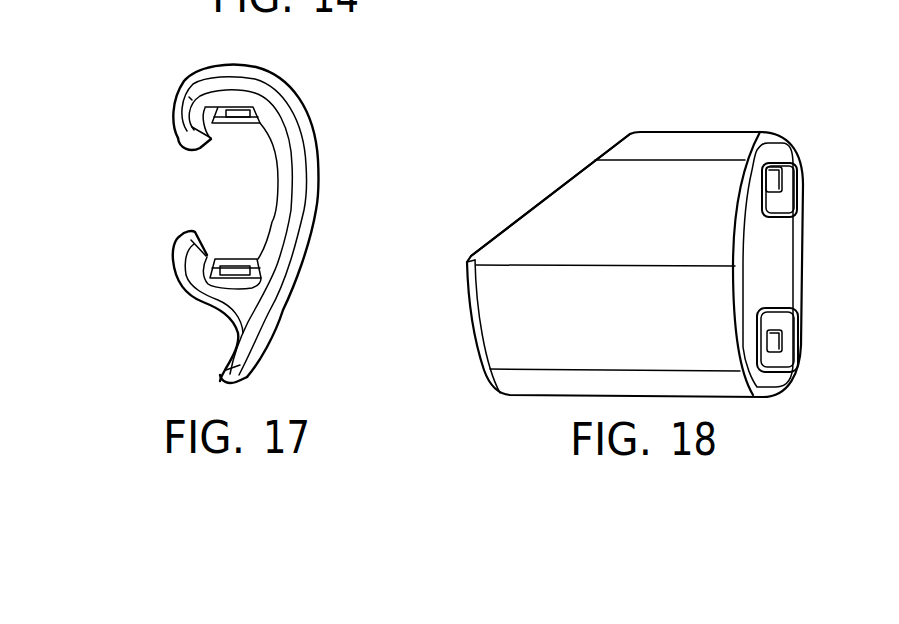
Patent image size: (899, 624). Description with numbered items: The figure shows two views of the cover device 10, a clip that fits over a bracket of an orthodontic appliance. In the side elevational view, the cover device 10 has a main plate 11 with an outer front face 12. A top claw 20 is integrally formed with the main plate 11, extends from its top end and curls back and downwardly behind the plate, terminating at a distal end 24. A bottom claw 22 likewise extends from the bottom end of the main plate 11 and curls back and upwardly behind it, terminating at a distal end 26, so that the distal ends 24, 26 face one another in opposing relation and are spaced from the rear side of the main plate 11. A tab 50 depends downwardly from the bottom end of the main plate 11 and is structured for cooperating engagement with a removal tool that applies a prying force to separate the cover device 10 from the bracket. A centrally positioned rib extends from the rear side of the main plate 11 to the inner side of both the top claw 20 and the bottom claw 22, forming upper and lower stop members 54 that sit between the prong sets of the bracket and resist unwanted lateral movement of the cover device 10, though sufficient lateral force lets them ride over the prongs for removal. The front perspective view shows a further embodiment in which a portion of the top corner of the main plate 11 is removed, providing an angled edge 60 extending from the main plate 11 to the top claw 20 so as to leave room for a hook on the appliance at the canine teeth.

In FIG. 17, the cover device 10 is at (340, 102).
In FIG. 18, the cover device 10 is at (772, 65).
In FIG. 17, the main plate 11 is at (315, 172).
In FIG. 18, the main plate 11 is at (572, 237).
In FIG. 18, the outer front face 12 is at (547, 317).
In FIG. 17, the top claw 20 is at (189, 84).
In FIG. 18, the top claw 20 is at (792, 185).
In FIG. 17, the bottom claw 22 is at (193, 297).
In FIG. 18, the bottom claw 22 is at (785, 347).
In FIG. 17, the distal end 24 is at (206, 152).
In FIG. 17, the distal end 26 is at (198, 233).
In FIG. 17, the tab 50 is at (240, 377).
In FIG. 17, the stop members 54 is at (240, 124).
In FIG. 18, the angled edge 60 is at (597, 152).